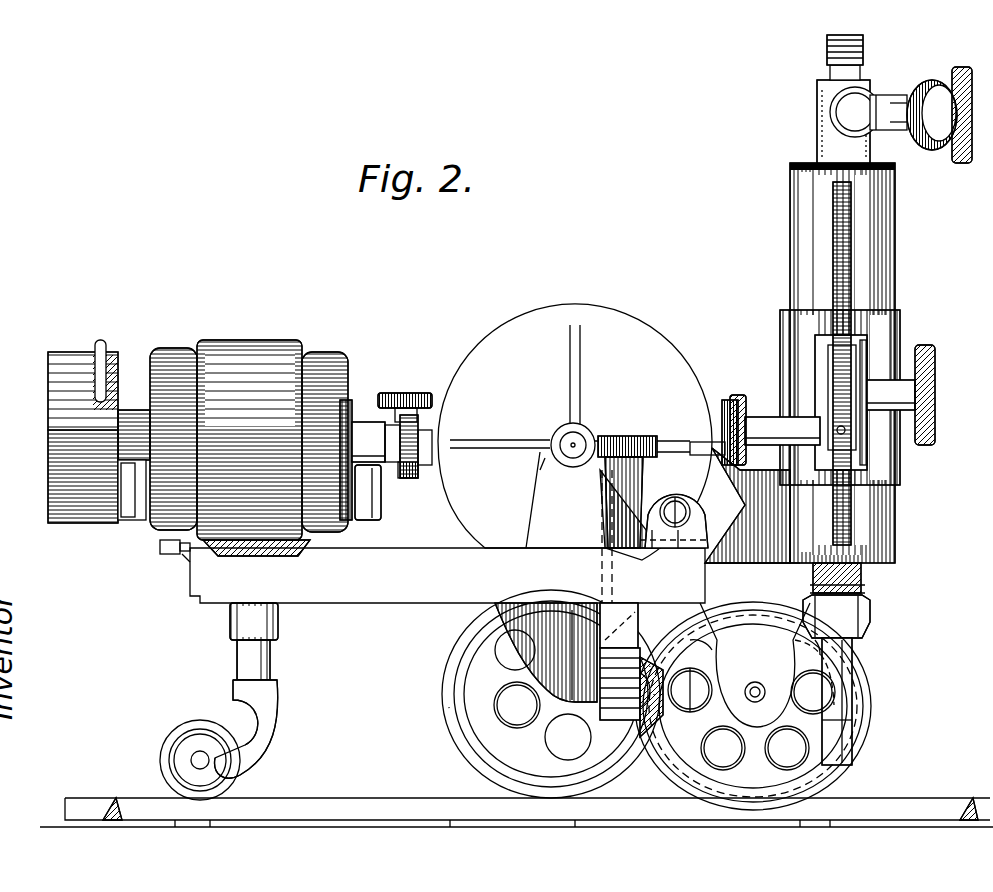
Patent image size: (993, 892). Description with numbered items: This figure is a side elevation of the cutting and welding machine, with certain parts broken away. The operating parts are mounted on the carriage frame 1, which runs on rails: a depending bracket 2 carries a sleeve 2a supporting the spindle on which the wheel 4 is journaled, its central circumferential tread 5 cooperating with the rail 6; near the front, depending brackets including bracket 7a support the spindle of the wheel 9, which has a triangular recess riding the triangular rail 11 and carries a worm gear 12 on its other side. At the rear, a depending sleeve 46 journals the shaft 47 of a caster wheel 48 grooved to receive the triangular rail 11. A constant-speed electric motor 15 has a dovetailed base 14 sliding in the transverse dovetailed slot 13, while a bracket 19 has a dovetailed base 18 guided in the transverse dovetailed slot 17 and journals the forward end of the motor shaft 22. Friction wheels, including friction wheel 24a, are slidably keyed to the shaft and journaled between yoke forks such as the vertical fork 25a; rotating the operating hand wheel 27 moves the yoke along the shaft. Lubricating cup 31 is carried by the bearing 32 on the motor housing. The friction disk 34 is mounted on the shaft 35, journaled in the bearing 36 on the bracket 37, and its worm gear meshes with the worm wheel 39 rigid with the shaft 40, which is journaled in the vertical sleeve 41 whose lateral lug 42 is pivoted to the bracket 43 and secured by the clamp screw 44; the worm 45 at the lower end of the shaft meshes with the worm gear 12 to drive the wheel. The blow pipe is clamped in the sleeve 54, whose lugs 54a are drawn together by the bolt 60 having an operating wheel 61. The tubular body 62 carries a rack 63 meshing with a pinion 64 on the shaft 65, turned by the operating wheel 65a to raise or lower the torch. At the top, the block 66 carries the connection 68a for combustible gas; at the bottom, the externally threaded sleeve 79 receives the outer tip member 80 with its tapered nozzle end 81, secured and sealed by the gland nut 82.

The carriage frame 1 is at (387, 596).
The depending bracket 2 is at (530, 636).
The sleeve 2a is at (545, 692).
The wheel 4 is at (458, 690).
The central circumferential tread 5 is at (455, 727).
The rail 6 is at (984, 798).
The depending bracket 7a is at (752, 672).
The wheel 9 is at (862, 696).
The triangular rail 11 is at (872, 797).
The worm gear 12 is at (668, 692).
The dovetailed slot 13 is at (290, 549).
The dovetailed base 14 is at (232, 553).
The constant-speed electric motor 15 is at (200, 440).
The transverse dovetailed slot 17 is at (757, 568).
The dovetailed base 18 is at (730, 562).
The bracket 19 is at (760, 500).
The motor shaft 22 is at (715, 432).
The friction wheel 24a is at (434, 440).
The vertical fork 25a is at (425, 466).
The operating hand wheel 27 is at (410, 404).
The lubricating cup 31 is at (378, 508).
The bearing 32 is at (368, 428).
The friction disk 34 is at (512, 335).
The shaft 35 is at (565, 452).
The bearing 36 is at (555, 435).
The bracket 37 is at (542, 488).
The worm wheel 39 is at (650, 436).
The shaft 40 is at (616, 434).
The vertical sleeve 41 is at (618, 485).
The lateral lug 42 is at (666, 484).
The bracket 43 is at (660, 548).
The clamp screw 44 is at (680, 548).
The worm 45 is at (625, 700).
The depending sleeve 46 is at (278, 620).
The shaft 47 is at (258, 660).
The caster wheel 48 is at (200, 726).
The sleeve 54 is at (892, 326).
The lugs 54a is at (856, 356).
The bolt 60 is at (846, 432).
The operating wheel 61 is at (737, 398).
The tubular body 62 is at (880, 270).
The rack 63 is at (852, 236).
The pinion 64 is at (832, 385).
The shaft 65 is at (812, 395).
The operating wheel 65a is at (934, 370).
The block 66 is at (808, 163).
The connection for combustible gas 68a is at (828, 66).
The externally threaded sleeve 79 is at (863, 590).
The outer tip member 80 is at (840, 688).
The tapered nozzle end 81 is at (852, 752).
The gland nut 82 is at (872, 622).